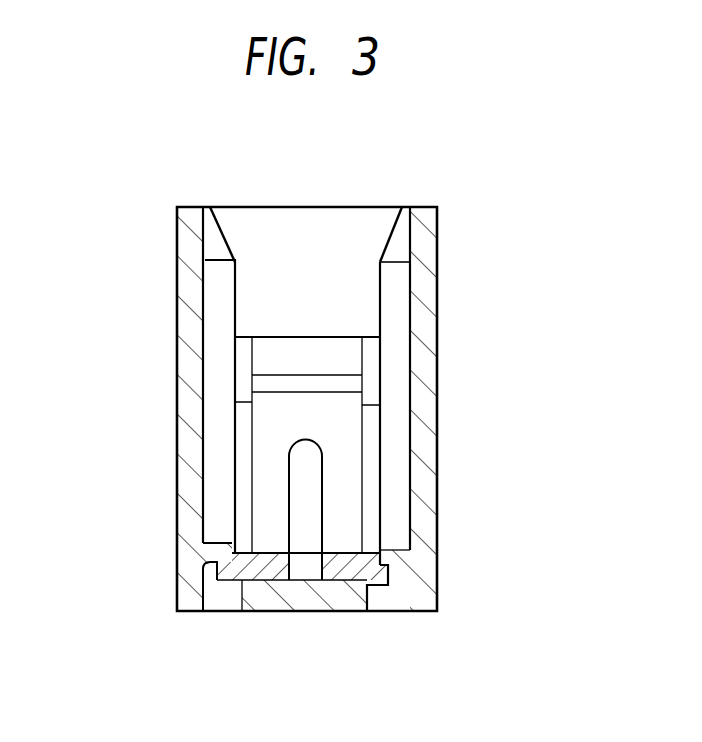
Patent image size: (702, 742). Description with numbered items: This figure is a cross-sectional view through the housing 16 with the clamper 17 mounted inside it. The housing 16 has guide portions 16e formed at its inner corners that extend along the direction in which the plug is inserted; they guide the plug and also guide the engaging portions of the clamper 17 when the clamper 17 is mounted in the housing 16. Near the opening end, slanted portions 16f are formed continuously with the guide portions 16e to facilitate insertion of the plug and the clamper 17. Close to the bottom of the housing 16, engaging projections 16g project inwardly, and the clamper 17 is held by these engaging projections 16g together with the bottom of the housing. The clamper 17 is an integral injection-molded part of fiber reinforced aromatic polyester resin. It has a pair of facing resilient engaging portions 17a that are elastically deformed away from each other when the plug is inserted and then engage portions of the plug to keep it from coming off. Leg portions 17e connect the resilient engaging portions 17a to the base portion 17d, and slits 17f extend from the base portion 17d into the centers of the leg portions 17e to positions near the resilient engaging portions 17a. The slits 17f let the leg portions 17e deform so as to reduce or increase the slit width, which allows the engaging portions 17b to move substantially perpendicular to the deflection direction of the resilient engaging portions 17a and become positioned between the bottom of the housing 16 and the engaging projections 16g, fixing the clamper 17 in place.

The housing 16 is at (158, 367).
The guide portions 16e is at (222, 288).
The slanted portions 16f is at (225, 233).
The engaging projections 16g is at (212, 553).
The clamper 17 is at (327, 310).
The resilient engaging portions 17a is at (337, 365).
The leg portions 17e is at (343, 437).
The slits 17f is at (312, 485).
The engaging portions 17b is at (203, 611).
The base portion 17d is at (342, 611).